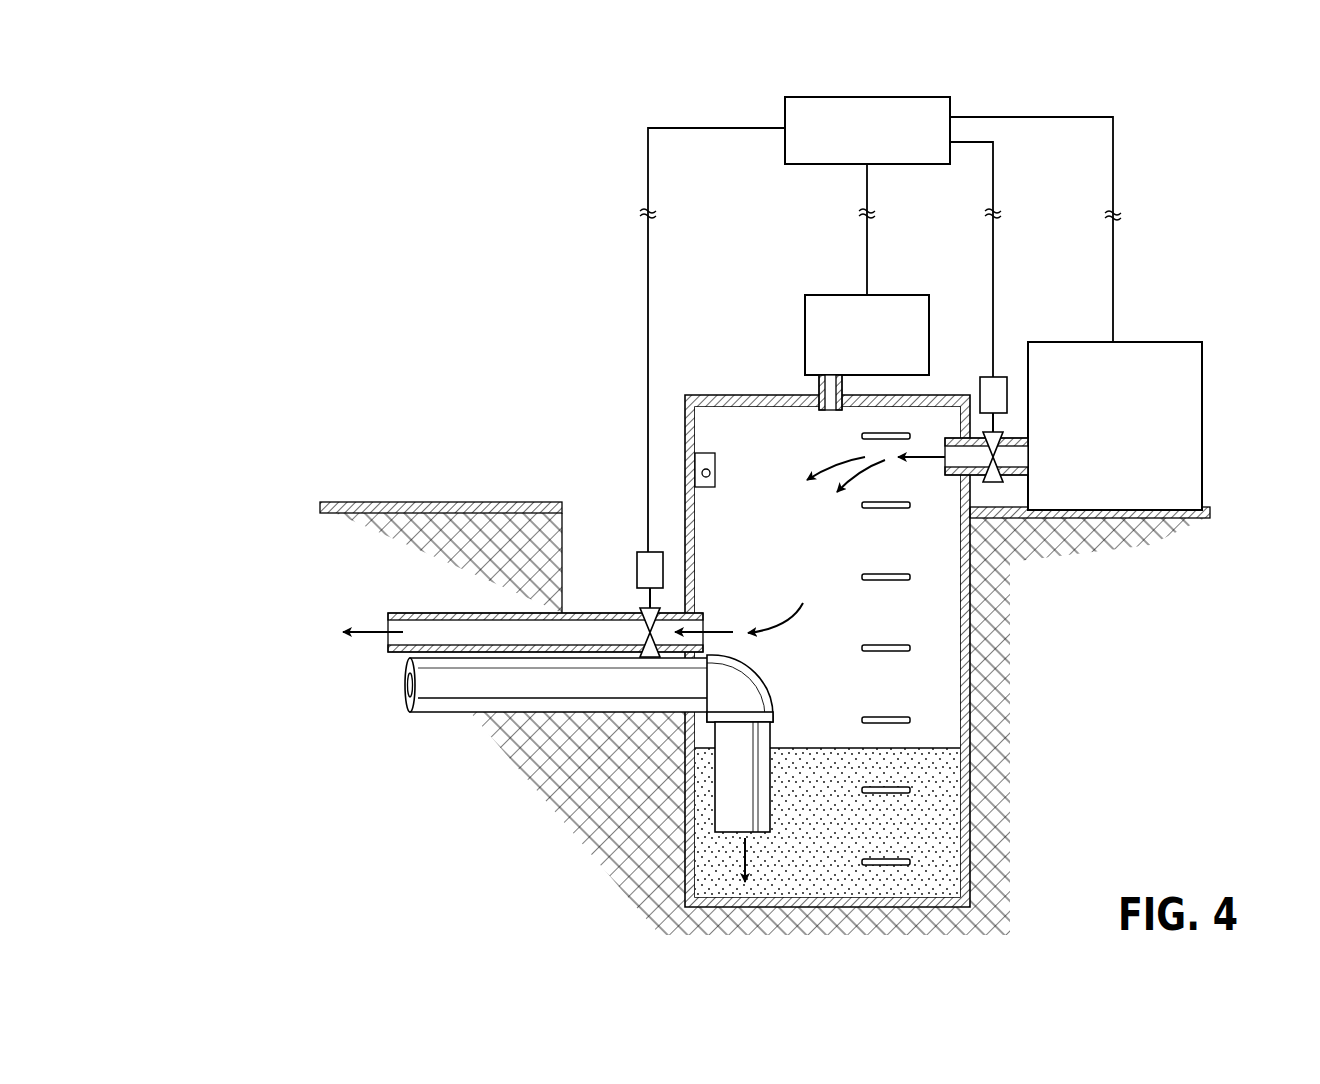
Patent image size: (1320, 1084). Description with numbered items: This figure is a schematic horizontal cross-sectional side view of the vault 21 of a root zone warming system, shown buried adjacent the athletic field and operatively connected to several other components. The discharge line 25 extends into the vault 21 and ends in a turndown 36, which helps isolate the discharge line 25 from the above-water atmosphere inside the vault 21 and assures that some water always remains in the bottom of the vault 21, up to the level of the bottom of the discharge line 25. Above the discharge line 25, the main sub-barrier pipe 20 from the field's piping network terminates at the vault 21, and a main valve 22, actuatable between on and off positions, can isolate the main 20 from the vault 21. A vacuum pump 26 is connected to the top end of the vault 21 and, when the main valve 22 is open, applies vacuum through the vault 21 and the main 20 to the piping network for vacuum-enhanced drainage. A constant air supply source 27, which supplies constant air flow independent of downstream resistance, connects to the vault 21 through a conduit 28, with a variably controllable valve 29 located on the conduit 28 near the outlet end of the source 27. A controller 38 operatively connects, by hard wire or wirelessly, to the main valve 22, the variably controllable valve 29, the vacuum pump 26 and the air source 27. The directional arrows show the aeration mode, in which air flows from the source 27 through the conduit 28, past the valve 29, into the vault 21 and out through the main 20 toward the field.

The main sub-barrier pipe 20 is at (465, 612).
The vault 21 is at (718, 395).
The main valve 22 is at (645, 608).
The discharge line 25 is at (467, 710).
The vacuum pump 26 is at (812, 295).
The constant air supply source 27 is at (1170, 348).
The conduit 28 is at (1008, 480).
The variably controllable valve 29 is at (1008, 432).
The turndown 36 is at (762, 743).
The controller 38 is at (812, 97).